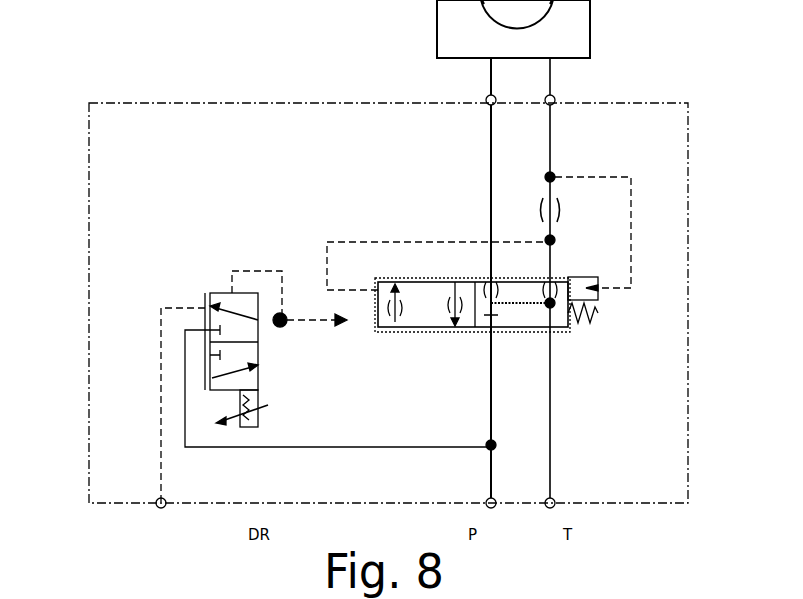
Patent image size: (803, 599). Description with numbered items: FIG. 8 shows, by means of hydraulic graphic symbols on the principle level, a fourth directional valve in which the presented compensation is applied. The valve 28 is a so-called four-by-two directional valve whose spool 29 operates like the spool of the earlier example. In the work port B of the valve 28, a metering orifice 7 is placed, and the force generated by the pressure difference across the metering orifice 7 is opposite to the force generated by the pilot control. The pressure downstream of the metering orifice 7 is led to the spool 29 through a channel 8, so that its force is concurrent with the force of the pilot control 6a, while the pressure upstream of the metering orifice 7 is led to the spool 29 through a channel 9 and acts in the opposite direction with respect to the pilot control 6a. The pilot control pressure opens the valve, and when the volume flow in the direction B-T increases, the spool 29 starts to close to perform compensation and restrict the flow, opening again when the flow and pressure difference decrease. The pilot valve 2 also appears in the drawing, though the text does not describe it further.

The valve 28 is at (220, 102).
The pilot pressure valve 2 is at (143, 318).
The pilot control 6a is at (345, 326).
The channel 8 is at (398, 238).
The spool 29 is at (432, 318).
The metering orifice 7 is at (558, 207).
The channel 9 is at (633, 262).